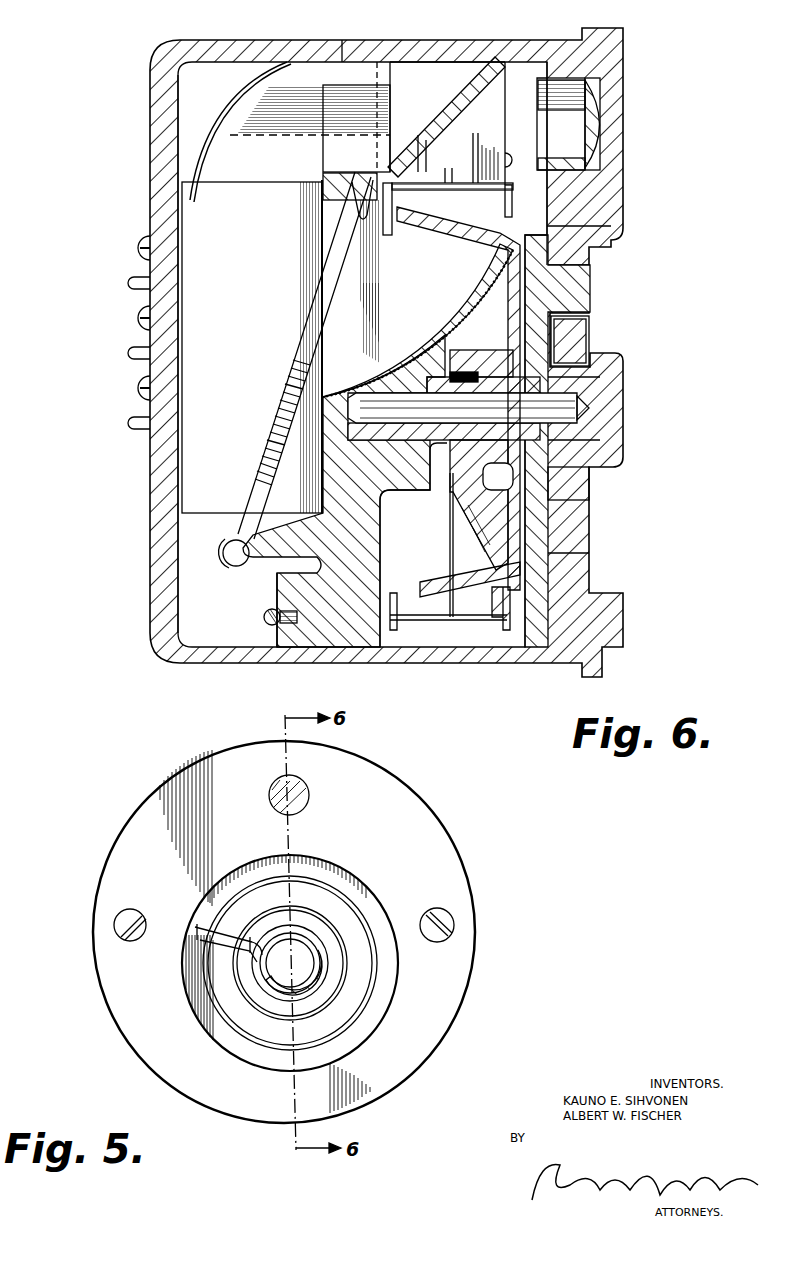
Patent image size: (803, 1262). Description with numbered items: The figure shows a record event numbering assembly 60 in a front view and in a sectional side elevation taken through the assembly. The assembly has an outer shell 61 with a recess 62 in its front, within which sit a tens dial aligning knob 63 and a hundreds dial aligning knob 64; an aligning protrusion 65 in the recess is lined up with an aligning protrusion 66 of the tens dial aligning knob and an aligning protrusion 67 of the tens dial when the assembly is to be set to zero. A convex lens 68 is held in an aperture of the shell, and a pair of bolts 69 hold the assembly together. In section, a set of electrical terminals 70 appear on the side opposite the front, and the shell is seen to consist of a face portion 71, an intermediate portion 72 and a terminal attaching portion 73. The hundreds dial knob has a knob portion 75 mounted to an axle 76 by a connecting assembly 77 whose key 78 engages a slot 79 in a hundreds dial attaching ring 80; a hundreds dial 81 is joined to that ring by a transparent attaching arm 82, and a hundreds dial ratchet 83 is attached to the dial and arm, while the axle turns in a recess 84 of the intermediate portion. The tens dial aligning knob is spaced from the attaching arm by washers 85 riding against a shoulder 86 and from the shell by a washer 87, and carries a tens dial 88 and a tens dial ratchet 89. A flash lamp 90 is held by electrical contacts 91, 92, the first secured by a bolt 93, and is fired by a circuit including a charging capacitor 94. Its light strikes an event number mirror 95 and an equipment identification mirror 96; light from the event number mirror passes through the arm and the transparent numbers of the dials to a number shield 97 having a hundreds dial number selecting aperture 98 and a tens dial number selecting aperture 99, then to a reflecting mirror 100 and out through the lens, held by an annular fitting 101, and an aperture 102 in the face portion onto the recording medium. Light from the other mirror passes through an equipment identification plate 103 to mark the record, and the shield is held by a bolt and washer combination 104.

In FIG. 6, the event numbering assembly 60 is at (633, 187).
In FIG. 5, the event numbering assembly 60 is at (452, 823).
In FIG. 6, the outer shell 61 is at (428, 42).
In FIG. 5, the outer shell 61 is at (380, 791).
In FIG. 6, the recess 62 is at (590, 570).
In FIG. 5, the recess 62 is at (387, 990).
In FIG. 6, the tens dial aligning knob 63 is at (590, 288).
In FIG. 5, the tens dial aligning knob 63 is at (352, 1002).
In FIG. 6, the hundreds dial aligning knob 64 is at (592, 340).
In FIG. 5, the hundreds dial aligning knob 64 is at (330, 940).
In FIG. 5, the aligning protrusion 65 is at (230, 938).
In FIG. 5, the aligning protrusion of the tens dial aligning knob 66 is at (250, 948).
In FIG. 5, the aligning protrusion of the tens dial 67 is at (262, 952).
In FIG. 6, the convex lens 68 is at (603, 137).
In FIG. 5, the convex lens 68 is at (300, 790).
In FIG. 5, the bolts 69 is at (117, 922).
In FIG. 6, the electrical terminals 70 is at (133, 321).
In FIG. 6, the face portion 71 is at (625, 47).
In FIG. 6, the intermediate portion 72 is at (448, 62).
In FIG. 6, the terminal attaching portion 73 is at (150, 178).
In FIG. 6, the knob portion 75 is at (600, 395).
In FIG. 6, the axle 76 is at (560, 412).
In FIG. 6, the connecting assembly 77 is at (590, 393).
In FIG. 6, the key 78 is at (462, 380).
In FIG. 6, the slot 79 is at (513, 380).
In FIG. 6, the hundreds dial attaching ring 80 is at (487, 370).
In FIG. 6, the hundreds dial 81 is at (400, 210).
In FIG. 6, the attaching arm 82 is at (395, 232).
In FIG. 6, the hundreds dial ratchet 83 is at (375, 172).
In FIG. 6, the recess 84 is at (350, 410).
In FIG. 6, the washers 85 is at (512, 458).
In FIG. 6, the shoulder 86 is at (523, 457).
In FIG. 6, the washer 87 is at (548, 256).
In FIG. 6, the tens dial 88 is at (475, 215).
In FIG. 6, the tens dial ratchet 89 is at (570, 208).
In FIG. 6, the flash lamp 90 is at (312, 313).
In FIG. 6, the electrical contact 91 is at (232, 565).
In FIG. 6, the electrical contact 92 is at (350, 200).
In FIG. 6, the bolt 93 is at (268, 622).
In FIG. 6, the charging capacitor 94 is at (190, 360).
In FIG. 6, the event number mirror 95 is at (437, 338).
In FIG. 6, the equipment identification mirror 96 is at (243, 115).
In FIG. 6, the number shield 97 is at (450, 183).
In FIG. 6, the hundreds dial number selecting aperture 98 is at (422, 155).
In FIG. 6, the tens dial number selecting aperture 99 is at (470, 173).
In FIG. 6, the reflecting mirror 100 is at (463, 93).
In FIG. 6, the annular fitting 101 is at (580, 167).
In FIG. 6, the aperture 102 is at (600, 108).
In FIG. 6, the equipment identification plate 103 is at (377, 110).
In FIG. 6, the bolt and washer combination 104 is at (505, 163).